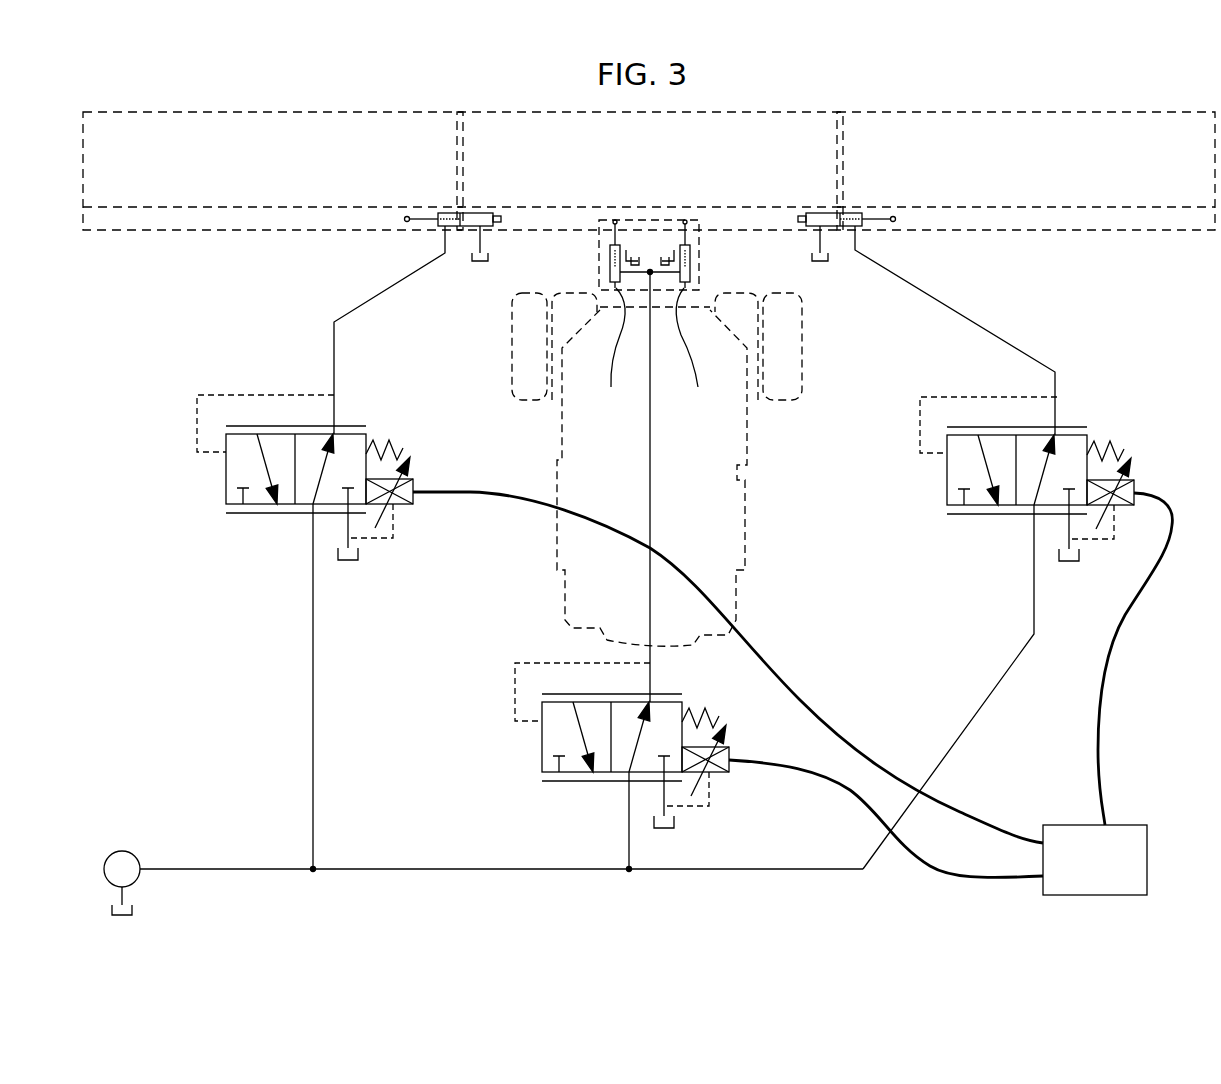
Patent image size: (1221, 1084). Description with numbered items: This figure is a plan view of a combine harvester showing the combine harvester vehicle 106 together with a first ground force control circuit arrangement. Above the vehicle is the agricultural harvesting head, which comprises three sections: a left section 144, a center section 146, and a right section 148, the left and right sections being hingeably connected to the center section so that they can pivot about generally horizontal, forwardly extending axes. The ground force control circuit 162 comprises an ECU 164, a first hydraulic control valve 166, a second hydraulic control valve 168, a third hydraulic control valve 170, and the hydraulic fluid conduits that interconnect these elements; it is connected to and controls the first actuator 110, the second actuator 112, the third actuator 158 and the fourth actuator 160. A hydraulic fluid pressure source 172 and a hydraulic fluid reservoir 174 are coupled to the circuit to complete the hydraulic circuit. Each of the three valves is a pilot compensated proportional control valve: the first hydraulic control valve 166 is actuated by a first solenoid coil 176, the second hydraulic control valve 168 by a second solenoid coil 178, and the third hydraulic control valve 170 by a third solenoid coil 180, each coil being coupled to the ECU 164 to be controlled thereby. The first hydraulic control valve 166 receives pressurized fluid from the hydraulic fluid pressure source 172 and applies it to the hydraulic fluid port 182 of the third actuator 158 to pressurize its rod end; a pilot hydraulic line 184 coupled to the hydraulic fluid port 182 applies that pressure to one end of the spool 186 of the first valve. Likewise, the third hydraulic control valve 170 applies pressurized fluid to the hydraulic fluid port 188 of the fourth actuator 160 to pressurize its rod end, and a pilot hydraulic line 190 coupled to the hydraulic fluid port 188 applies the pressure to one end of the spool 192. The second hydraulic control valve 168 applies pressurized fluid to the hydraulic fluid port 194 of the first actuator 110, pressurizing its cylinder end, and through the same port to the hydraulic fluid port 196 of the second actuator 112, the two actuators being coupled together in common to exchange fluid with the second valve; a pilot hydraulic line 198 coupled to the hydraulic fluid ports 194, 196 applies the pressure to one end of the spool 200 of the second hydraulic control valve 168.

The combine harvester vehicle 106 is at (762, 512).
The first actuator 110 is at (608, 268).
The second actuator 112 is at (691, 268).
The left section 144 is at (272, 112).
The center section 146 is at (776, 112).
The right section 148 is at (1040, 112).
The third actuator 158 is at (480, 194).
The fourth actuator 160 is at (818, 194).
The ground force control circuit 162 is at (176, 322).
The ECU 164 is at (1136, 825).
The first hydraulic control valve 166 is at (264, 541).
The second hydraulic control valve 168 is at (565, 798).
The third hydraulic control valve 170 is at (977, 536).
The hydraulic fluid pressure source 172 is at (126, 851).
The hydraulic fluid reservoir 174 is at (478, 262).
The first solenoid coil 176 is at (412, 505).
The second solenoid coil 178 is at (729, 775).
The third solenoid coil 180 is at (1128, 506).
The hydraulic fluid port 182 is at (443, 229).
The pilot hydraulic line 184 is at (228, 392).
The spool 186 is at (226, 484).
The hydraulic fluid port 188 is at (857, 230).
The pilot hydraulic line 190 is at (915, 418).
The spool 192 is at (947, 496).
The hydraulic fluid port 194 is at (607, 352).
The hydraulic fluid port 196 is at (697, 352).
The pilot hydraulic line 198 is at (532, 662).
The spool 200 is at (542, 751).